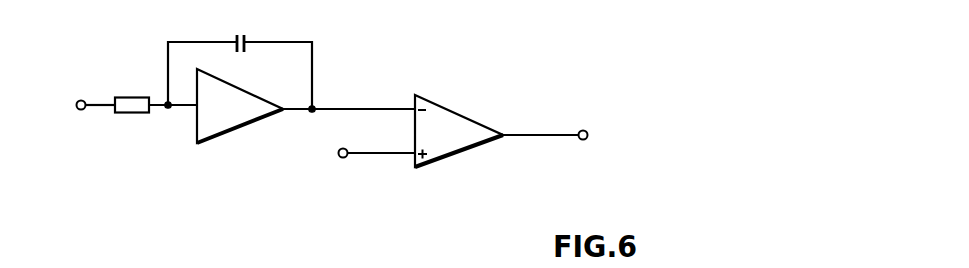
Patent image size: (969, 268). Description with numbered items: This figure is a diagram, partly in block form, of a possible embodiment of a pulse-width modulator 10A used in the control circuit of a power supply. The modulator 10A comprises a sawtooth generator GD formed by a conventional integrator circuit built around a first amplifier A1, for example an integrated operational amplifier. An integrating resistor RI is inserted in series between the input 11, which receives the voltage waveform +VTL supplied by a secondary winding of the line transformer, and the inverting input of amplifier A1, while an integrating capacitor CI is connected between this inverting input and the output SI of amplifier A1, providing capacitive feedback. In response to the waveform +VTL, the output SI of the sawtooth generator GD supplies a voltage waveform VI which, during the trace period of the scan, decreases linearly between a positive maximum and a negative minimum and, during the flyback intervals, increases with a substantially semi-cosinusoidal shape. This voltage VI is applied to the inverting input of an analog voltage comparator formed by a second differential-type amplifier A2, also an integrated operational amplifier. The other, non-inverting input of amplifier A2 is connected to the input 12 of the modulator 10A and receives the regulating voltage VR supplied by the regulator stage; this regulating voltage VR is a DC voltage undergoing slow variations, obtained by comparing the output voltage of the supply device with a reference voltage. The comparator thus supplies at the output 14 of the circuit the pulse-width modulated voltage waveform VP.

The voltage waveform VTL is at (65, 104).
The input 11 is at (82, 100).
The integrating resistor RI is at (132, 97).
The integrating capacitor CI is at (236, 37).
The first amplifier A1 is at (242, 126).
The sawtooth generator GD is at (188, 127).
The voltage waveform VI is at (305, 126).
The output SI is at (314, 107).
The pulse-width modulator 10A is at (362, 87).
The second amplifier A2 is at (440, 164).
The input 12 is at (346, 148).
The regulating voltage VR is at (357, 168).
The output 14 is at (584, 130).
The output voltage waveform VP is at (557, 153).